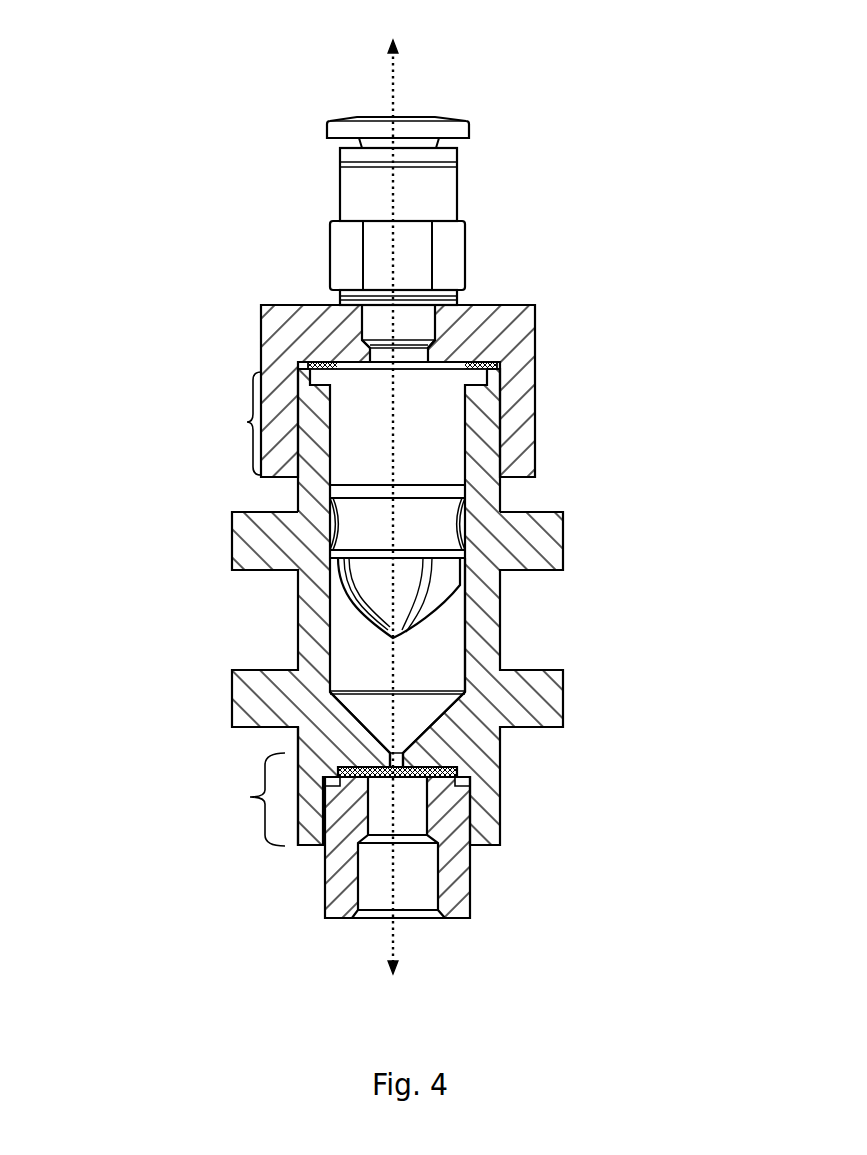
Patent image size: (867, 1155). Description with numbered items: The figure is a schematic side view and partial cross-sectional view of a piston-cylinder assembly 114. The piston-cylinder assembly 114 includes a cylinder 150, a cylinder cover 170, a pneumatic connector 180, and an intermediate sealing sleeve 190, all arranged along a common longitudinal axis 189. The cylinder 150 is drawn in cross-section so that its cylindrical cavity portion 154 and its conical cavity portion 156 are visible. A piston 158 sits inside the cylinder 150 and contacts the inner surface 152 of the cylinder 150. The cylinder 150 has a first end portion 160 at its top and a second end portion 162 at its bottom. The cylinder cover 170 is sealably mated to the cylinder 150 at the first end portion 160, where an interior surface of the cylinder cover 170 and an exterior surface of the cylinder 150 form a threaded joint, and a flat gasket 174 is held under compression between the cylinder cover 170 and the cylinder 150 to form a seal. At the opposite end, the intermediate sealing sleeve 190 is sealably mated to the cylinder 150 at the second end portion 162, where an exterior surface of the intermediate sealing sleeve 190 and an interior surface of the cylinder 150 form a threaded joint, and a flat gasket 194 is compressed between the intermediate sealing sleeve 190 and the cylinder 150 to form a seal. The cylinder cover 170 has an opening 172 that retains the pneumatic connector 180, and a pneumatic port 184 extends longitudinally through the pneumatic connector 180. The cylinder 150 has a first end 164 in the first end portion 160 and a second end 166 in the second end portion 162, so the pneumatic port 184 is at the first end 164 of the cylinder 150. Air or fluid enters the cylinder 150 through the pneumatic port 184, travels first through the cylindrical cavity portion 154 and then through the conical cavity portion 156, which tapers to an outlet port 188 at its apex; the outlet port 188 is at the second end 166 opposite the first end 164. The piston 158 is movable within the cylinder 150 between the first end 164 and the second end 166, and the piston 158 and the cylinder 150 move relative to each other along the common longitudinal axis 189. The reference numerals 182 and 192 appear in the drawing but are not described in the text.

The piston-cylinder assembly 114 is at (205, 80).
The common longitudinal axis 189 is at (388, 80).
The pneumatic port 184 is at (420, 108).
The pneumatic connector 180 is at (467, 243).
The fitting tube 182 is at (378, 316).
The opening 172 is at (378, 352).
The cylinder cover 170 is at (535, 330).
The flat gasket 174 is at (487, 366).
The first end portion 160 is at (247, 422).
The first end 164 is at (412, 373).
The piston 158 is at (467, 555).
The cylindrical cavity portion 154 is at (360, 648).
The cylinder 150 is at (563, 538).
The inner surface 152 is at (468, 657).
The conical cavity portion 156 is at (360, 708).
The outlet port 188 is at (395, 742).
The second end 166 is at (378, 755).
The flat gasket 194 is at (433, 778).
The second end portion 162 is at (240, 797).
The intermediate sealing sleeve 190 is at (472, 875).
The nut bore 192 is at (373, 875).